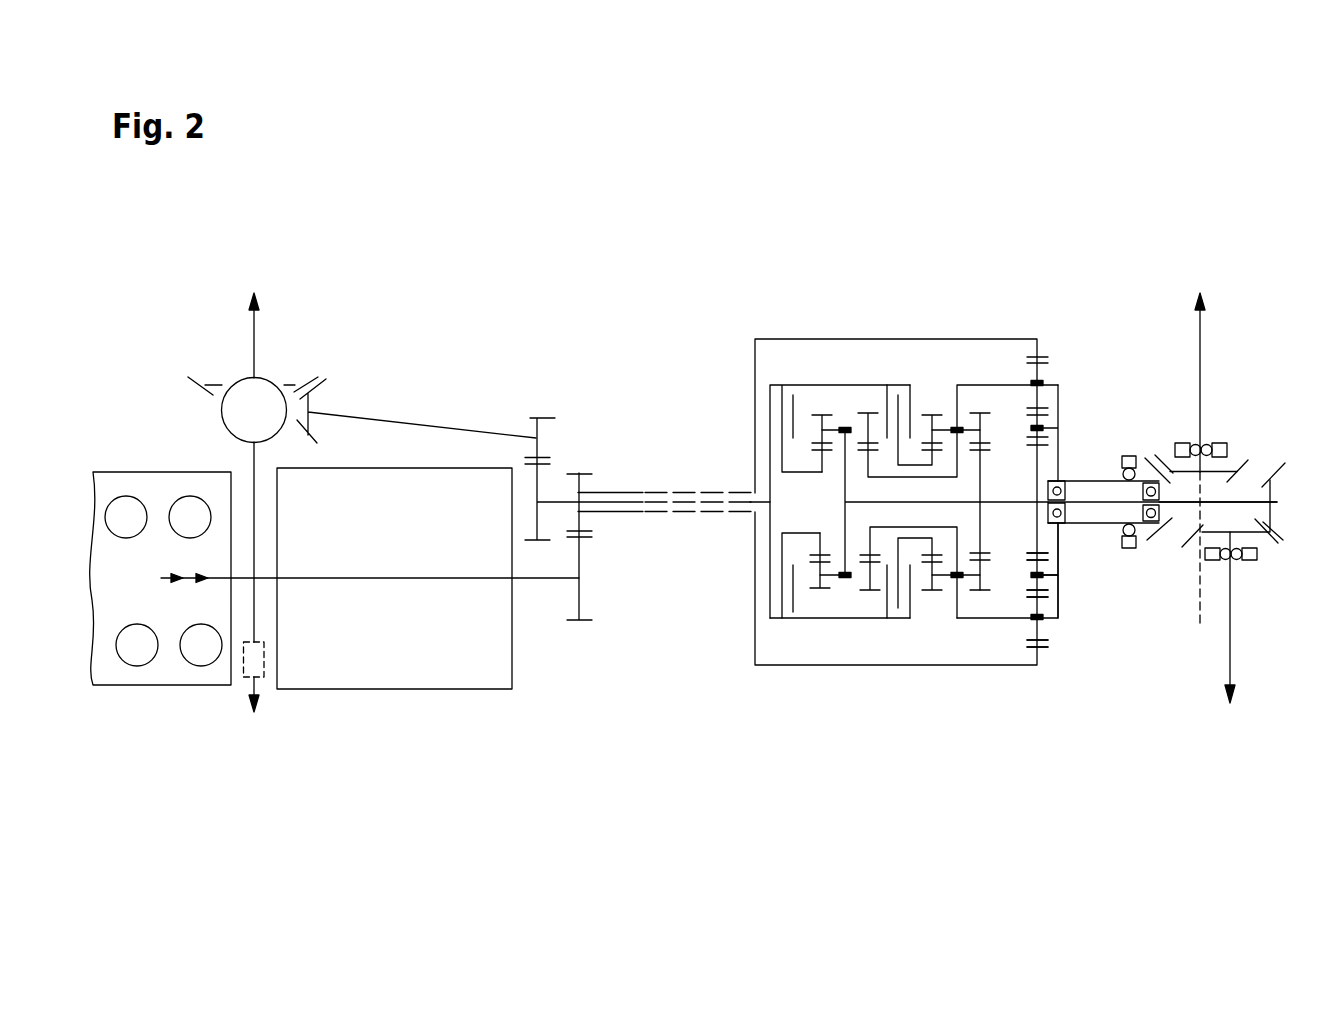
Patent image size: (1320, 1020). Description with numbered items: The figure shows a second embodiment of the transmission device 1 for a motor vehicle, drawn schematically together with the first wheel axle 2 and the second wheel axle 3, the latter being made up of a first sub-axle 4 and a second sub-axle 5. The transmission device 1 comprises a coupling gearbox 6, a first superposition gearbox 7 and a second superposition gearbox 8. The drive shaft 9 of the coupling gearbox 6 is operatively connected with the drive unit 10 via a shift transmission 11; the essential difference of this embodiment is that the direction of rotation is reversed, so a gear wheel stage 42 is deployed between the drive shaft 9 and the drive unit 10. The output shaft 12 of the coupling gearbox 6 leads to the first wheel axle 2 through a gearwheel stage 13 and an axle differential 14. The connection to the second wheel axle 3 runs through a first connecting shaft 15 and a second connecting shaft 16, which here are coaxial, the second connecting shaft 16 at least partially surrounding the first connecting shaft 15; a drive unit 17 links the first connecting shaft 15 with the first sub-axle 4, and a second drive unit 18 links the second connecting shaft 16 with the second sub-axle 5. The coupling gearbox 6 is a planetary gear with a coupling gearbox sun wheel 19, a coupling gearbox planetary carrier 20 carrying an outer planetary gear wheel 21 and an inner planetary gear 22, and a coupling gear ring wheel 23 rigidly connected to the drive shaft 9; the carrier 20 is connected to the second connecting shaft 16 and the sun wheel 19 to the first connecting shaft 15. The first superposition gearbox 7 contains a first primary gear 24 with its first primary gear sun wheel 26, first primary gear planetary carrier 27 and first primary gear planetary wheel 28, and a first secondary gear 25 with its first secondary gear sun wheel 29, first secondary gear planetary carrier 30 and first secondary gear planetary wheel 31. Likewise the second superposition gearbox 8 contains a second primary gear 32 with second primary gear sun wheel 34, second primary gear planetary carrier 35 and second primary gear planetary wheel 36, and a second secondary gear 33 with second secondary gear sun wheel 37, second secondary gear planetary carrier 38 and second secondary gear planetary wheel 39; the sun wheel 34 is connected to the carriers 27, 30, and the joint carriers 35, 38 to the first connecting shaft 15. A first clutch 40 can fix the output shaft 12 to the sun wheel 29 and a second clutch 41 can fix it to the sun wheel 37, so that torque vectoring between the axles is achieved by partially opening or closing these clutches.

The transmission device 1 is at (965, 433).
The first wheel axle 2 is at (343, 494).
The second wheel axle 3 is at (1224, 455).
The first sub-axle 4 is at (1232, 656).
The second sub-axle 5 is at (1200, 344).
The coupling gearbox 6 is at (1039, 326).
The first superposition gearbox 7 is at (978, 371).
The second superposition gearbox 8 is at (845, 371).
The drive shaft 9 is at (683, 497).
The drive unit 10 is at (168, 673).
The shift transmission 11 is at (378, 673).
The output shaft 12 is at (628, 497).
The gearwheel stage 13 is at (647, 492).
The axle differential 14 is at (237, 417).
The first connecting shaft 15 is at (1247, 502).
The second connecting shaft 16 is at (1088, 478).
The drive unit 17 is at (1250, 571).
The second drive unit 18 is at (1248, 413).
The coupling gearbox sun wheel 19 is at (1045, 551).
The coupling gearbox planetary carrier 20 is at (1060, 600).
The outer planetary gear wheel 21 is at (1040, 622).
The inner planetary gear 22 is at (1042, 577).
The coupling gear ring wheel 23 is at (1043, 643).
The first primary gear 24 is at (989, 403).
The first secondary gear 25 is at (934, 405).
The first primary gear sun wheel 26 is at (985, 554).
The first primary gear planetary carrier 27 is at (946, 656).
The first primary gear planetary wheel 28 is at (971, 591).
The first secondary gear sun wheel 29 is at (918, 548).
The first secondary gear planetary carrier 30 is at (953, 579).
The first secondary gear planetary wheel 31 is at (937, 585).
The second primary gear 32 is at (870, 405).
The second secondary gear 33 is at (820, 405).
The second primary gear sun wheel 34 is at (865, 553).
The second primary gear planetary carrier 35 is at (752, 617).
The second primary gear planetary wheel 36 is at (873, 595).
The second secondary gear sun wheel 37 is at (817, 539).
The second secondary gear planetary carrier 38 is at (841, 593).
The second secondary gear planetary wheel 39 is at (820, 606).
The first clutch 40 is at (912, 371).
The second clutch 41 is at (778, 368).
The gear wheel stage 42 is at (595, 555).